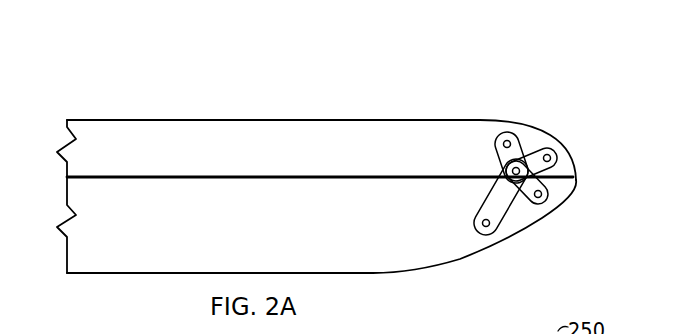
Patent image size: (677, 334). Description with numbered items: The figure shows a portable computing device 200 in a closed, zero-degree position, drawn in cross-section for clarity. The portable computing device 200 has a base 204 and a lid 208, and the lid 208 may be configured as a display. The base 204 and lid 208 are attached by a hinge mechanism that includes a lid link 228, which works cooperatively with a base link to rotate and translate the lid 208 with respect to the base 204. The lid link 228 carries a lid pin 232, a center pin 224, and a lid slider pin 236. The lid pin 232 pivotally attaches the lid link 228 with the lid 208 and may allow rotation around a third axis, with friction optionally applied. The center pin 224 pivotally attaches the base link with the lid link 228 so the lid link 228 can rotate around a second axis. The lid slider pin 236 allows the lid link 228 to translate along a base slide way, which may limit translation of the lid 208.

The portable computing device 200 is at (347, 151).
The base 204 is at (442, 265).
The lid 208 is at (318, 120).
The center pin 224 is at (555, 181).
The lid link 228 is at (557, 187).
The lid pin 232 is at (553, 160).
The lid slider pin 236 is at (491, 224).